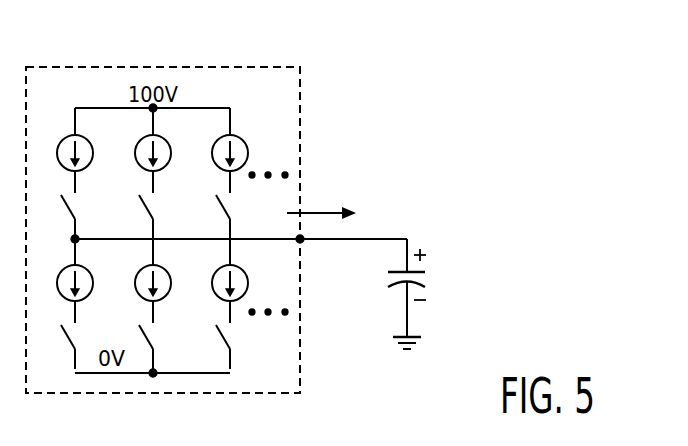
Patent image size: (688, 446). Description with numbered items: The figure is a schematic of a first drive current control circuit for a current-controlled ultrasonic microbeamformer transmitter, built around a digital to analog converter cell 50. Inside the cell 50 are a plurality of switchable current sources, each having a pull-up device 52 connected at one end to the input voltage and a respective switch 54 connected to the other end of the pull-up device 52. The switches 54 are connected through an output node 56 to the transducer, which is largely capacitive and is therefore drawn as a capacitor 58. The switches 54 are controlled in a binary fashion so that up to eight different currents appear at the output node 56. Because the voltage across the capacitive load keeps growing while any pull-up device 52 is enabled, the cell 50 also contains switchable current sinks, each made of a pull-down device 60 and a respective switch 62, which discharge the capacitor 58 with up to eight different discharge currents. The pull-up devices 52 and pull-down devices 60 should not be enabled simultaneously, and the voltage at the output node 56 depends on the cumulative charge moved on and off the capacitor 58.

The digital to analog converter (DAC) cell 50 is at (272, 62).
The pull-up device 52 is at (249, 153).
The switch 54 is at (240, 207).
The output node 56 is at (300, 239).
The capacitor 58 is at (423, 280).
The pull-down device 60 is at (249, 285).
The switch 62 is at (232, 334).